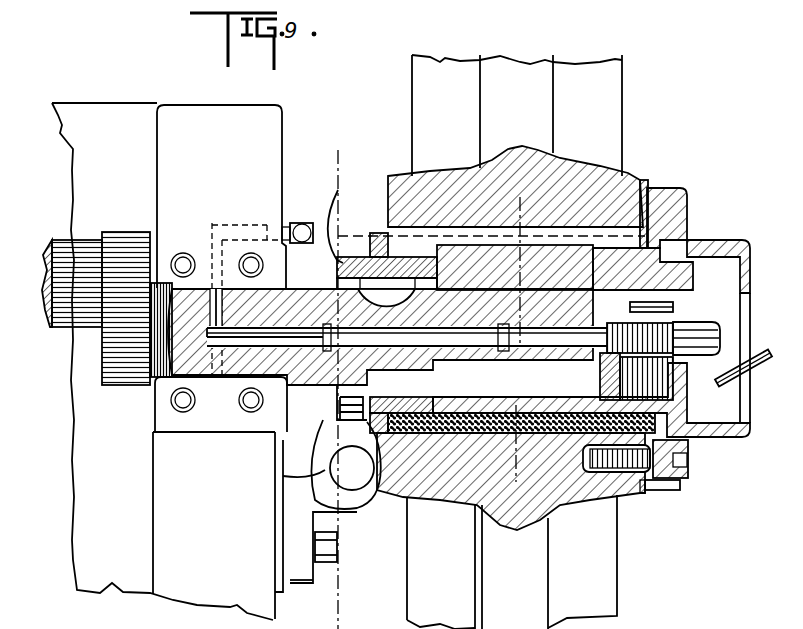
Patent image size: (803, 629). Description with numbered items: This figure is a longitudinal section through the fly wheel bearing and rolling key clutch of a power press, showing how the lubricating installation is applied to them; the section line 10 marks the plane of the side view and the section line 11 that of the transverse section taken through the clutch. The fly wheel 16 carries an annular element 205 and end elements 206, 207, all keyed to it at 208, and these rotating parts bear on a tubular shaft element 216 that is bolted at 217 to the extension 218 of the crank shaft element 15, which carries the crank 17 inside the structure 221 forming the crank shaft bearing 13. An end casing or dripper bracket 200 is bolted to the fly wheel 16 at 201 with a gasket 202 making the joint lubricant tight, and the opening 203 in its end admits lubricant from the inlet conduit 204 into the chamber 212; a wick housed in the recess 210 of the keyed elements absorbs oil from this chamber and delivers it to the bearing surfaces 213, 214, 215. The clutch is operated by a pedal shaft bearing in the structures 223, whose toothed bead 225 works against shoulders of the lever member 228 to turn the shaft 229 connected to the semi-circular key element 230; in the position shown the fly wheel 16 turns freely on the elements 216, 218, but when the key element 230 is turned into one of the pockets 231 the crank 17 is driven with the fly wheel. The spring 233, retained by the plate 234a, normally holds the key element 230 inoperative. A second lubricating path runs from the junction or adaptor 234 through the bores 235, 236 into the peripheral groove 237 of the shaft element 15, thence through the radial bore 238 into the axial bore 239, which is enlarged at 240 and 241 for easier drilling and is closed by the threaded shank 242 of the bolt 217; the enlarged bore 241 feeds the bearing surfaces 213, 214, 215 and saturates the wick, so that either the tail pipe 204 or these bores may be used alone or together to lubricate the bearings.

The line 10— 10 is at (310, 160).
The line 11— 11 is at (492, 200).
The crank shaft bearing 13 is at (237, 280).
The crank shaft element 15 is at (178, 311).
The fly wheel 16 is at (617, 98).
The crank 17 is at (48, 329).
The end casing or dripper bracket 200 is at (688, 192).
The bolting 201 is at (675, 470).
The gasket 202 is at (642, 500).
The opening 203 is at (747, 312).
The inlet conduit 204 is at (766, 363).
The annular element 205 is at (565, 240).
The end element 206 is at (371, 244).
The end element 207 is at (685, 222).
The key 208 is at (403, 232).
The recess 210 is at (567, 500).
The chamber 212 is at (722, 421).
The bearing surface 213 is at (383, 262).
The bearing surface 214 is at (627, 245).
The bearing surface 215 is at (560, 272).
The tubular shaft element 216 is at (339, 193).
The bolt 217 is at (682, 341).
The extension 218 is at (327, 402).
The structure 221 is at (282, 116).
The structures 223 is at (337, 467).
The toothed bead 225 is at (340, 448).
The lever member 228 is at (345, 420).
The shaft 229 is at (340, 408).
The semi-circular key element 230 is at (601, 473).
The pockets 231 is at (463, 507).
The spring 233 is at (688, 456).
The junction or adaptor 234 is at (303, 223).
The plate 234a is at (712, 372).
The bore 235 is at (222, 230).
The bore 236 is at (210, 252).
The peripheral groove 237 is at (213, 378).
The radial bore 238 is at (213, 302).
The axial bore 239 is at (297, 327).
The enlargement of axial bore 240 is at (445, 346).
The enlarged bore 241 is at (673, 190).
The threaded shank 242 is at (652, 312).